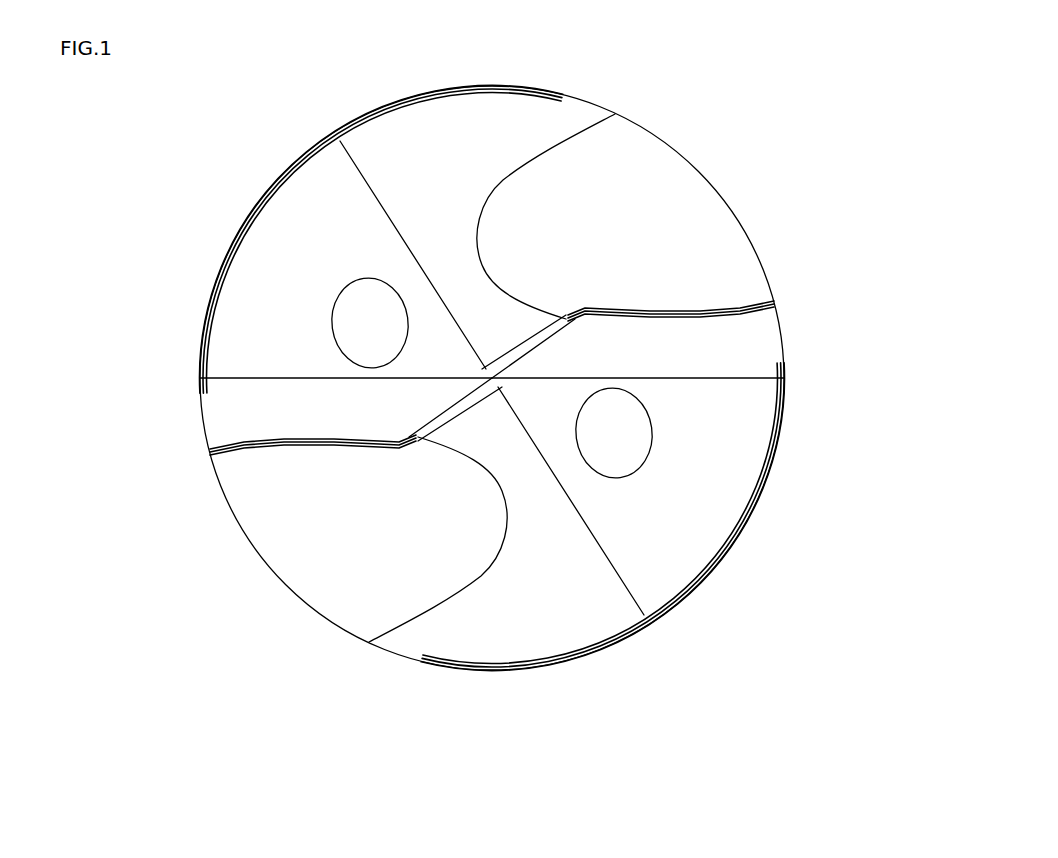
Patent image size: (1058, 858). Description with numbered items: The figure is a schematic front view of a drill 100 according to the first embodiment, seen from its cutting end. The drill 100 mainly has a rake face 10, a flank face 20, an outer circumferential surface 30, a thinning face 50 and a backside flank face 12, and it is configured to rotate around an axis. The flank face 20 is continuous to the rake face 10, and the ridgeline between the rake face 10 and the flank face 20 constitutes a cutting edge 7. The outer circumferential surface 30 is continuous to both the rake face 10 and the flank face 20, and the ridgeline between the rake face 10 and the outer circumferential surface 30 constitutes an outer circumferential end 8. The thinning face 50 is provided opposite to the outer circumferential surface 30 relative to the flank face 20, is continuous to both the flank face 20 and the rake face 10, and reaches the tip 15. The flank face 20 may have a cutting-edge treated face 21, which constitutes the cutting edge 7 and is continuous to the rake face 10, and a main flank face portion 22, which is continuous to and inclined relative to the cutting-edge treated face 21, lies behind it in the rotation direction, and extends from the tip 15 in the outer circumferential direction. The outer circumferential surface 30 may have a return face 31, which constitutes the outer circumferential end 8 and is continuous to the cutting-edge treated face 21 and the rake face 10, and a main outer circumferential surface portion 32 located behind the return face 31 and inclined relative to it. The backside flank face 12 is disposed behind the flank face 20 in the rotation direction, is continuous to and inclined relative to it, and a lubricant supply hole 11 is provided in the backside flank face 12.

The drill 100 is at (699, 101).
The rake face 10 is at (678, 205).
The cutting edge 7 is at (708, 308).
The outer circumferential end 8 is at (224, 450).
The lubricant supply hole 11 is at (337, 307).
The backside flank face 12 is at (265, 248).
The tip 15 is at (495, 385).
The flank face 20 is at (133, 287).
The cutting-edge treated face 21 is at (328, 435).
The main flank face portion 22 is at (267, 392).
The outer circumferential surface 30 is at (133, 345).
The return face 31 is at (211, 458).
The main outer circumferential surface portion 32 is at (197, 352).
The thinning face 50 is at (438, 160).